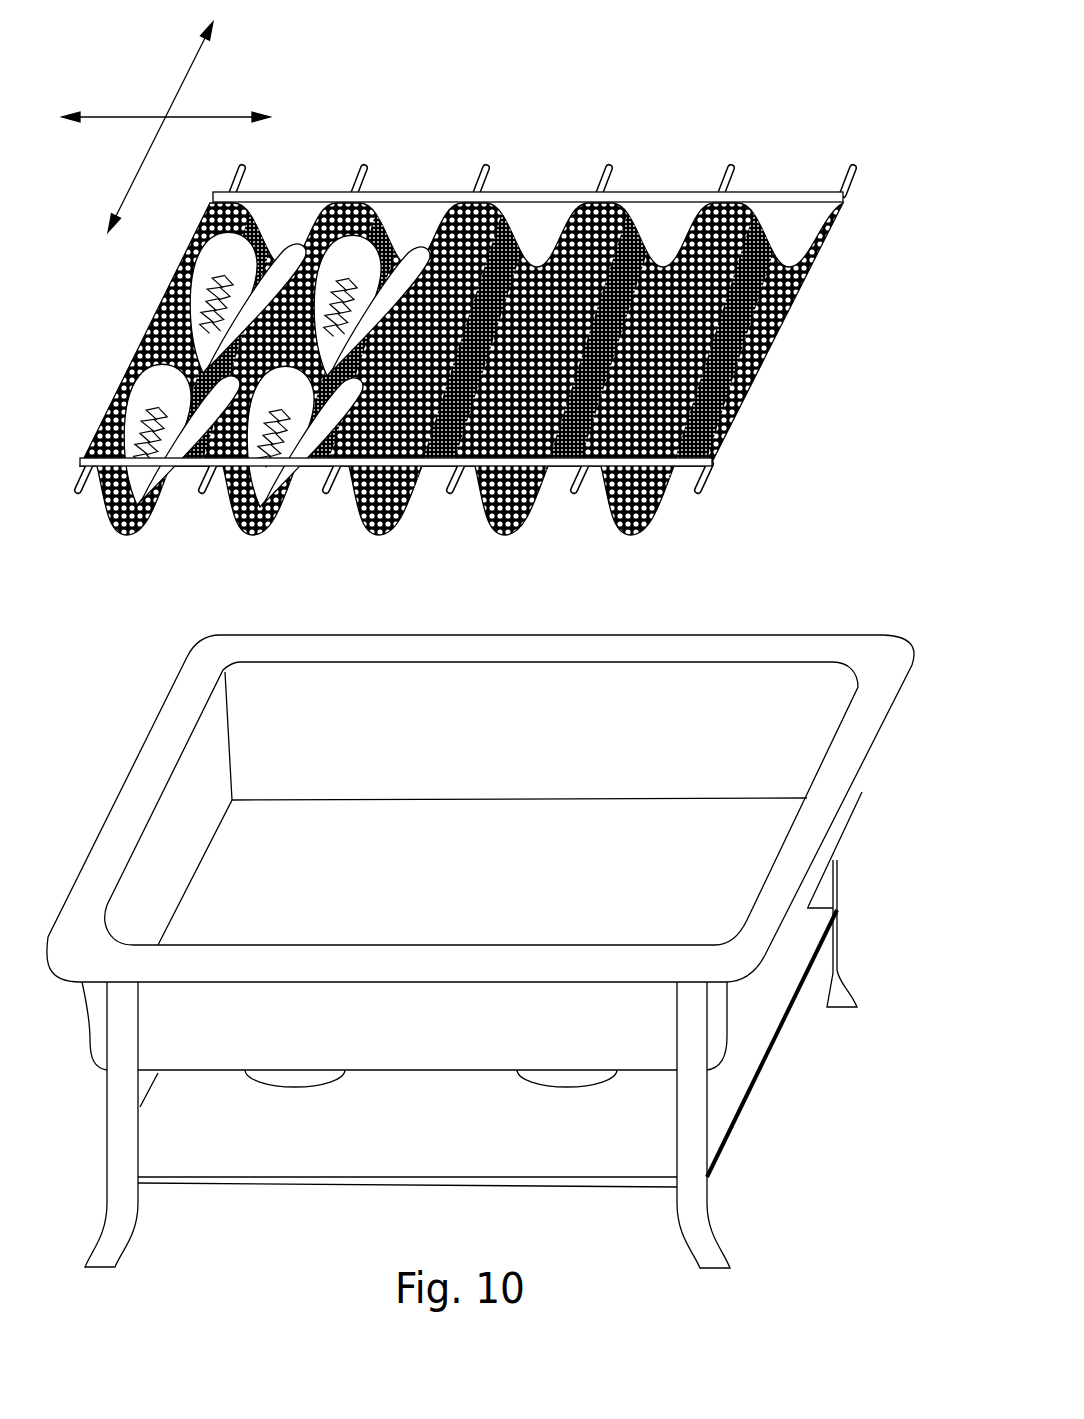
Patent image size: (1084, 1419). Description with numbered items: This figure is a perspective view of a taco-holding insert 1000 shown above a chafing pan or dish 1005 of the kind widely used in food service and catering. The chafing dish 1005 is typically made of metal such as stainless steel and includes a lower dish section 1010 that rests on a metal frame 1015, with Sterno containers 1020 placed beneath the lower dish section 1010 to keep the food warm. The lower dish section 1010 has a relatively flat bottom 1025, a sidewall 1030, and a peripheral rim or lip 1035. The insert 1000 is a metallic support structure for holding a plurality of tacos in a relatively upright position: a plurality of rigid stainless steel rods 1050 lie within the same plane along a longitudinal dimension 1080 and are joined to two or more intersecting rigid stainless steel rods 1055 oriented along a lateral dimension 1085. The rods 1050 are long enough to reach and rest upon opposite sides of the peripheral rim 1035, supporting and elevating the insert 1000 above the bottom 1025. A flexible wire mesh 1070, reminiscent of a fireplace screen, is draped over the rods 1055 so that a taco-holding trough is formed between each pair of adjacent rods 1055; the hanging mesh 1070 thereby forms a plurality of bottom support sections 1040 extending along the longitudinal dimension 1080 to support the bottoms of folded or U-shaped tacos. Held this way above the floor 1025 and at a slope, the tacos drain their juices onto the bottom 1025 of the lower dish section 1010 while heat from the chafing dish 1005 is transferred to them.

The taco-holding insert 1000 is at (513, 349).
The chafing pan or dish 1005 is at (498, 983).
The lower dish section 1010 is at (860, 802).
The metal frame 1015 is at (693, 1130).
The Sterno containers 1020 is at (287, 1087).
The bottom 1025 is at (482, 808).
The sidewall 1030 is at (440, 1035).
The peripheral rim or lip 1035 is at (135, 802).
The bottom support sections 1040 is at (502, 542).
The rigid stainless steel rods 1050 is at (606, 168).
The intersecting rigid stainless steel rods 1055 is at (792, 192).
The flexible wire mesh 1070 is at (768, 266).
The longitudinal dimension 1080 is at (132, 177).
The lateral dimension 1085 is at (222, 113).